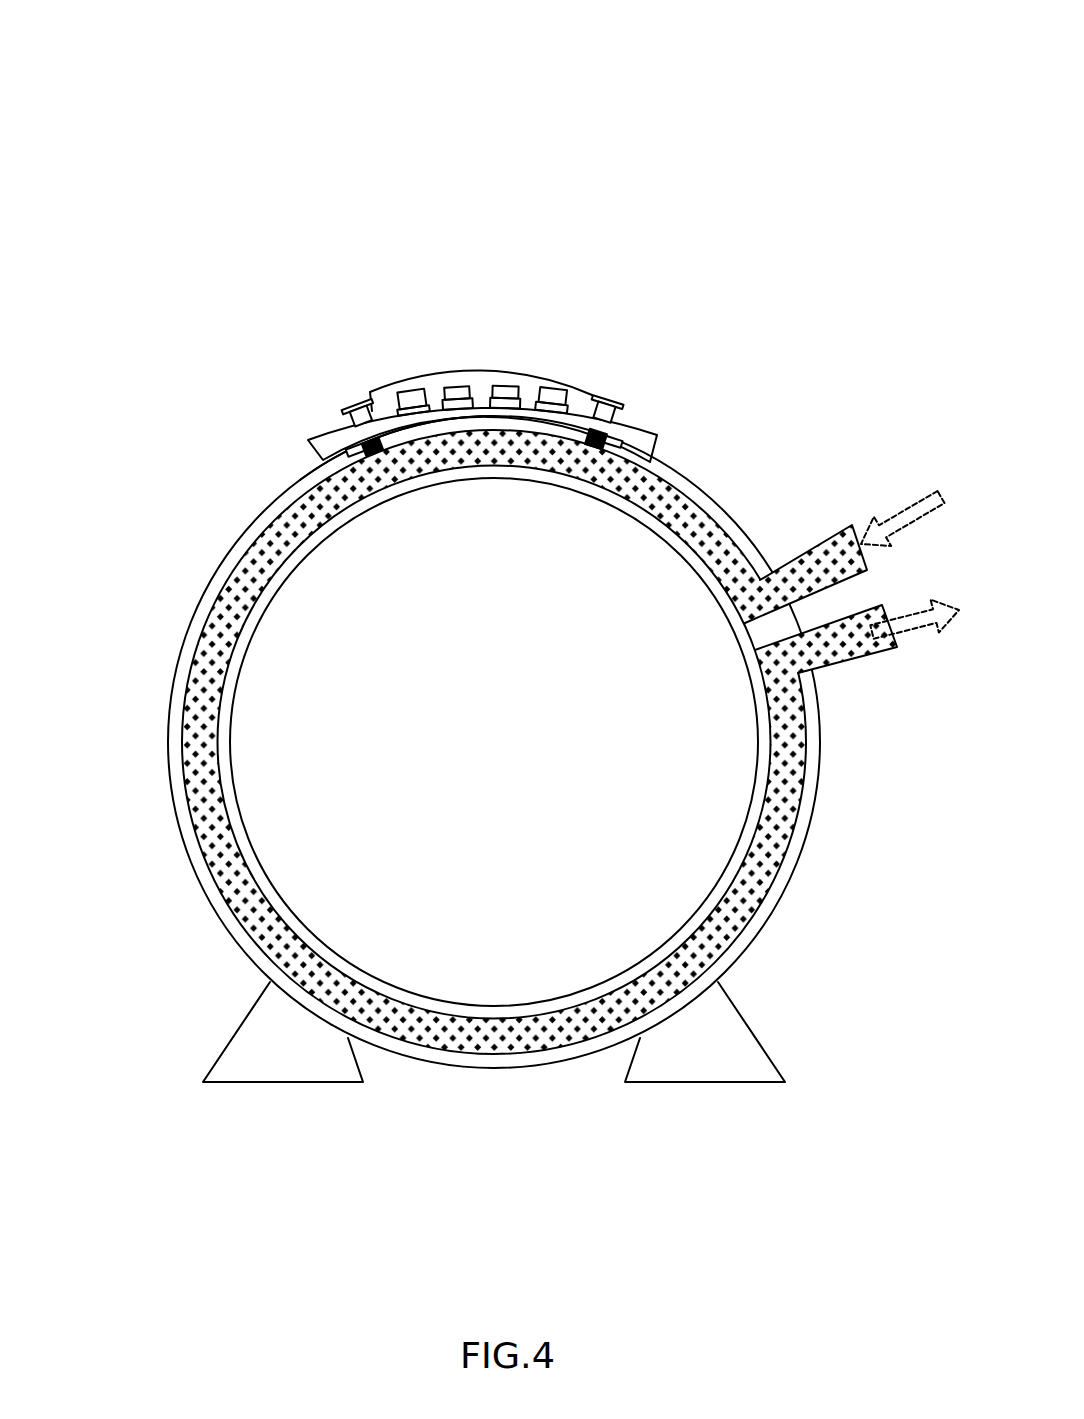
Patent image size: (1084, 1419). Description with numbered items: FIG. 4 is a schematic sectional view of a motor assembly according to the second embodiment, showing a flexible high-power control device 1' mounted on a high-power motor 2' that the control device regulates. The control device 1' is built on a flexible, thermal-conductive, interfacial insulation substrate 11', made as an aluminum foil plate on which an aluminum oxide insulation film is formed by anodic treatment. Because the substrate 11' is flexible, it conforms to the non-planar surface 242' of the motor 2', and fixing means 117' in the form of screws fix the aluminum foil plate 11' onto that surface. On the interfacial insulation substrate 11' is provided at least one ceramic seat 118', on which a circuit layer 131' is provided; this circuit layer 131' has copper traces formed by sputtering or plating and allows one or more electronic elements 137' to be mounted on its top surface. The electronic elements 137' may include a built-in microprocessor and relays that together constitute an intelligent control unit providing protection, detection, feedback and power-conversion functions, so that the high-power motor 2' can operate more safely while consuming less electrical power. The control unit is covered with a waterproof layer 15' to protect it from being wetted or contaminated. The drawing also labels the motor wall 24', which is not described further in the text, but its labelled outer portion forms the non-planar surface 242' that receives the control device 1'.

The flexible high-power control device 1' is at (537, 242).
The high-power motor 2' is at (502, 787).
The flexible, thermal-conductive, interfacial insulation substrate 11' is at (560, 422).
The waterproof layer 15' is at (481, 303).
The outer wall 24' is at (432, 742).
The fixing means 117' is at (326, 361).
The ceramic seat 118' is at (681, 337).
The circuit layer 131' is at (512, 315).
The electronic elements 137' is at (604, 317).
The non-planar surface 242' is at (344, 398).